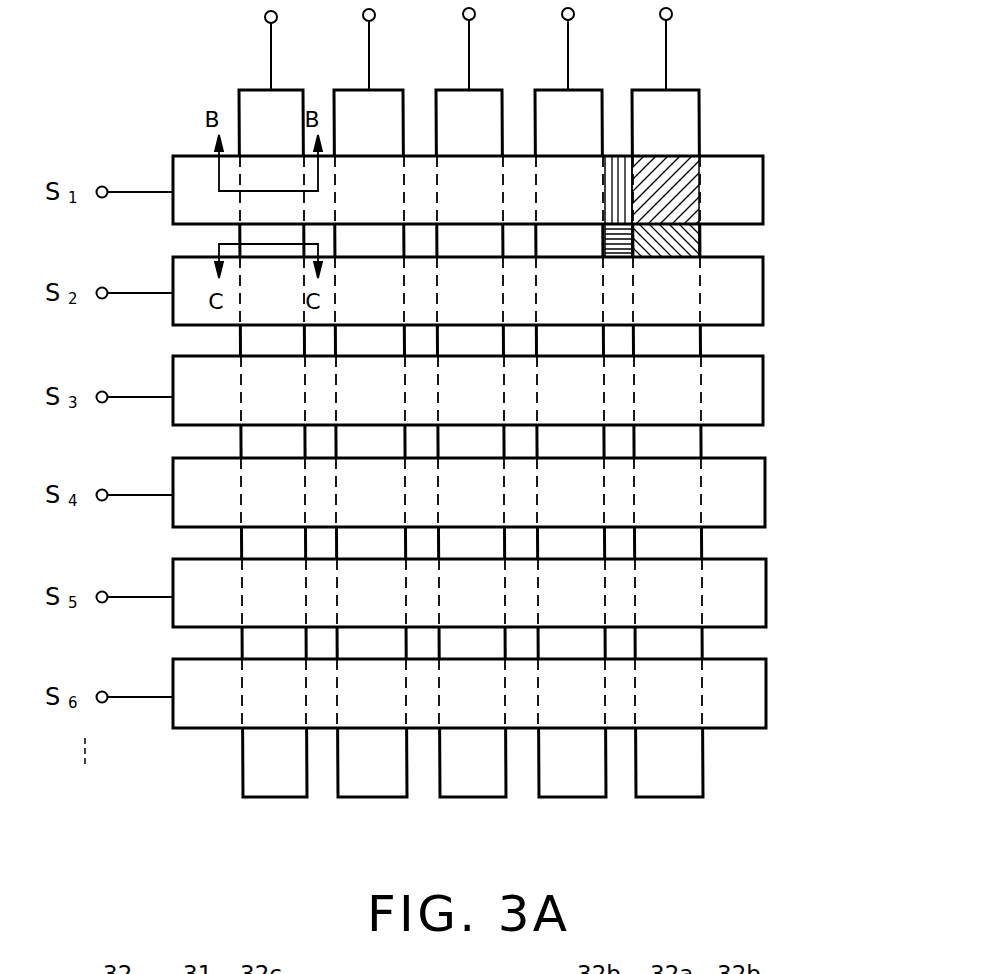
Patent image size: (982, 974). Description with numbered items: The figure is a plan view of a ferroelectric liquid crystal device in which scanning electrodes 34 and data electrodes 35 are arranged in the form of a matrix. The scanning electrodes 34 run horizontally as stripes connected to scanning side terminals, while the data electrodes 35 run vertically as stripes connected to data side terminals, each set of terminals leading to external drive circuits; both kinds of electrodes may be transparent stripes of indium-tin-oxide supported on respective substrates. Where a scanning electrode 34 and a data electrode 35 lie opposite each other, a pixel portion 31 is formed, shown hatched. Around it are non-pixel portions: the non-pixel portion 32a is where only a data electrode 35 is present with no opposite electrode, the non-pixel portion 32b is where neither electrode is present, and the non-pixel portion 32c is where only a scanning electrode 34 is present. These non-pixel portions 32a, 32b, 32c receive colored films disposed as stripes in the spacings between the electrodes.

The pixel portion 31 is at (670, 160).
The non-pixel portion 32a is at (690, 240).
The non-pixel portion 32b is at (618, 255).
The non-pixel portion 32c is at (620, 156).
The scanning electrode 34 is at (763, 178).
The data electrode 35 is at (278, 797).